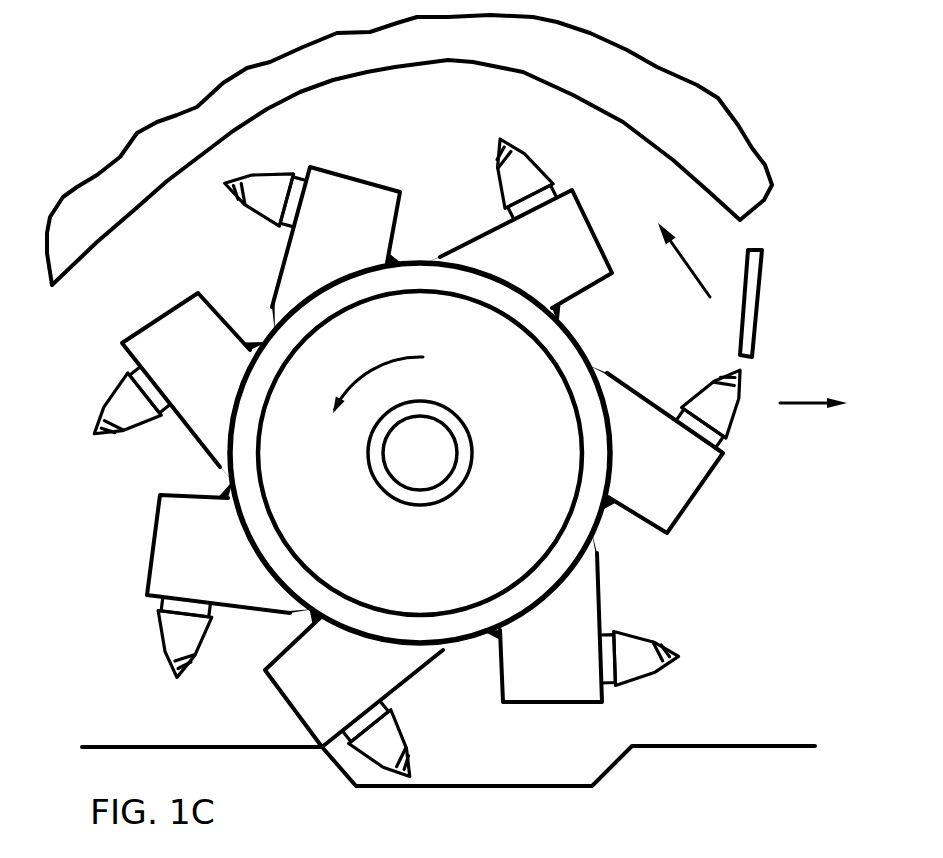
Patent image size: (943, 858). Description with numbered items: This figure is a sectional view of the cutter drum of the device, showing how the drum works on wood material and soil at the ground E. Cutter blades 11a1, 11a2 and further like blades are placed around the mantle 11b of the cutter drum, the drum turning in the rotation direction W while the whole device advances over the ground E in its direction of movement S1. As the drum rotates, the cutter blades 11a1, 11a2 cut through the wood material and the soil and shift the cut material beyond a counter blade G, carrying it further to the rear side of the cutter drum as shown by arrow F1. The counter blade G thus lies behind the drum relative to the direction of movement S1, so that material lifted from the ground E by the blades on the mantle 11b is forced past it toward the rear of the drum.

The cutter blade 11a1 is at (388, 750).
The cutter blade 11a2 is at (635, 652).
The mantle 11b is at (577, 522).
The rotation direction of wheel W is at (368, 369).
The arrow F1 is at (688, 265).
The counter blade G is at (752, 306).
The direction of movement S1 is at (807, 402).
The ground E is at (707, 746).